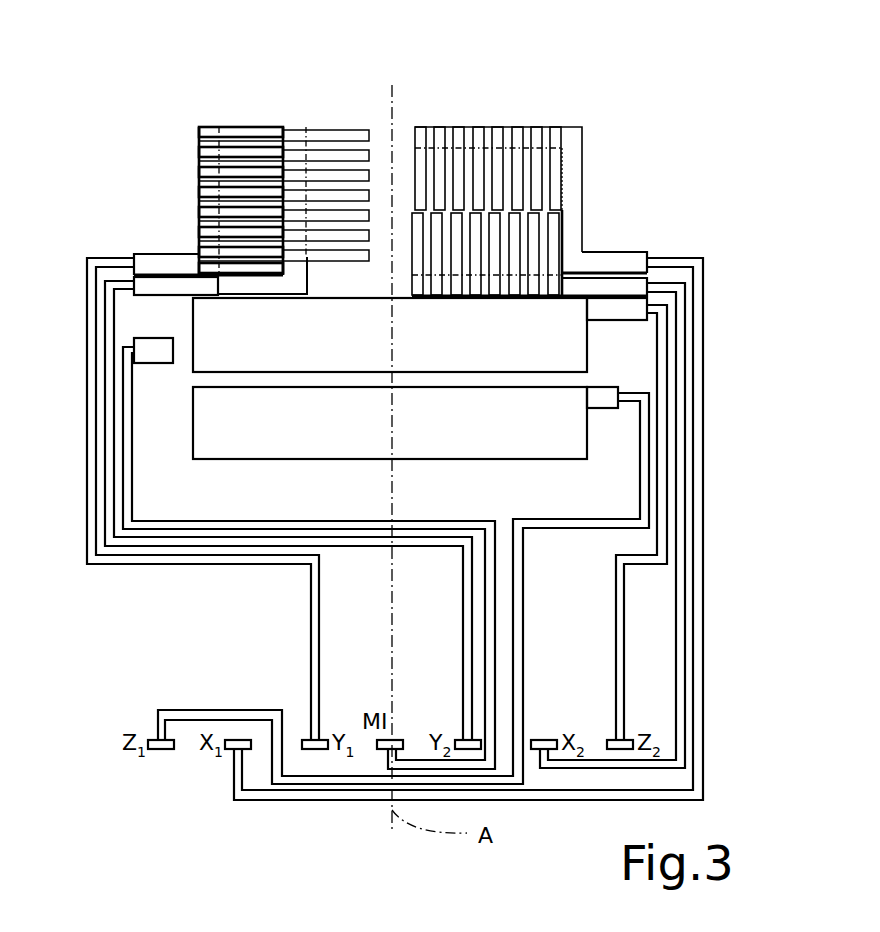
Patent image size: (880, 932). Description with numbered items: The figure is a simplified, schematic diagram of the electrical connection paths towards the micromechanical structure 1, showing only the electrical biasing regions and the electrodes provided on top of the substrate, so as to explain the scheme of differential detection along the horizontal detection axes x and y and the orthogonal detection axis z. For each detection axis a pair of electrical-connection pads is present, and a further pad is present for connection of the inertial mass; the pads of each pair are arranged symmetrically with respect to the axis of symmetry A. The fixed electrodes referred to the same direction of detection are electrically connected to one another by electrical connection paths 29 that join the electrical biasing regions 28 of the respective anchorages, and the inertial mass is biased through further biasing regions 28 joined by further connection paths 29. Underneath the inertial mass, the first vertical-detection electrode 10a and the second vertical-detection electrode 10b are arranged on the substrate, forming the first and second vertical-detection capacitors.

The micromechanical structure 1 is at (86, 108).
The electrical biasing regions 28 is at (323, 133).
The electrical connection paths 29 is at (145, 285).
The first vertical-detection electrode 10a is at (405, 423).
The second vertical-detection electrode 10b is at (420, 335).